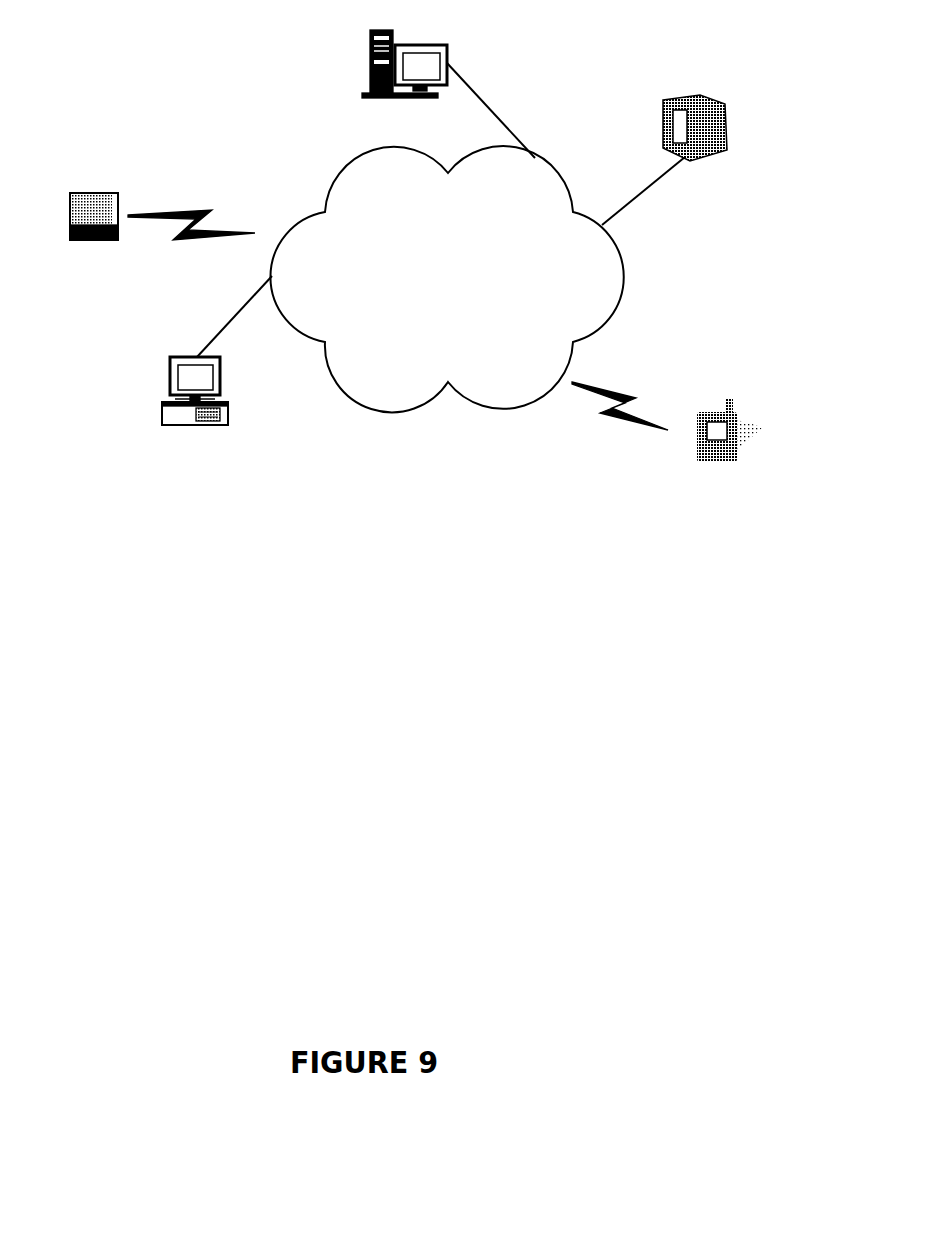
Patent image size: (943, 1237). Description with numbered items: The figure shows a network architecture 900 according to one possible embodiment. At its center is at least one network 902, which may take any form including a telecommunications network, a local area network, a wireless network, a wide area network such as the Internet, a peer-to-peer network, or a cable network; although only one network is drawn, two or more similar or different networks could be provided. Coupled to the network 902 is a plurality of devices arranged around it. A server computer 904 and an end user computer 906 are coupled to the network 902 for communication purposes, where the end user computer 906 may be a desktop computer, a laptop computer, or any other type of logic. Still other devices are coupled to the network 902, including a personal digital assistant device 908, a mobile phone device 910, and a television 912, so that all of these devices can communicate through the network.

The network architecture 900 is at (365, 677).
The network 902 is at (498, 408).
The server computer 904 is at (370, 63).
The end user computer 906 is at (162, 407).
The personal digital assistant (PDA) device 908 is at (93, 193).
The mobile phone device 910 is at (693, 413).
The television 912 is at (678, 90).